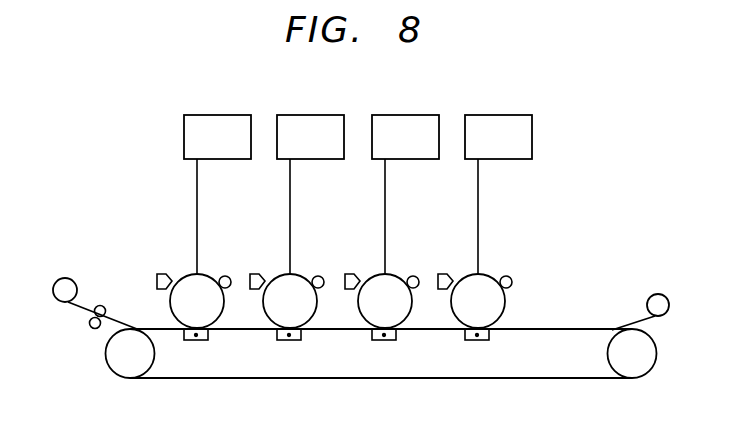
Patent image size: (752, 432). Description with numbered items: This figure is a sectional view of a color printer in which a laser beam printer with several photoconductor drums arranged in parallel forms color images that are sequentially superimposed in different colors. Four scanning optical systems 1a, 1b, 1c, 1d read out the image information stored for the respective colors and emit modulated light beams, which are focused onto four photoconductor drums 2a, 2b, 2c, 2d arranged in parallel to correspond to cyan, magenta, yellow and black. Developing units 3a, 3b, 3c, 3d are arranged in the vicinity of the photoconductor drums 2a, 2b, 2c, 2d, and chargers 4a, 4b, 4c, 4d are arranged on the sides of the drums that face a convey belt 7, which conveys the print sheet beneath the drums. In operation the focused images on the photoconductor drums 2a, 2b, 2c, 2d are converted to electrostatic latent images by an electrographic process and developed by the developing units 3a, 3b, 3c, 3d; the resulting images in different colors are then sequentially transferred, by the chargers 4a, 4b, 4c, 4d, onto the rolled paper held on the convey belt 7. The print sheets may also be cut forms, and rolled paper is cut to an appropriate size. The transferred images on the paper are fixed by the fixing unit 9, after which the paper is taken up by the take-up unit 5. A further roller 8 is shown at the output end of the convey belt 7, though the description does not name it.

The scanning optical system 1a is at (518, 114).
The scanning optical system 1b is at (425, 114).
The scanning optical system 1c is at (330, 114).
The scanning optical system 1d is at (237, 114).
The photoconductor drum 2a is at (465, 272).
The photoconductor drum 2b is at (372, 272).
The photoconductor drum 2c is at (277, 272).
The photoconductor drum 2d is at (184, 272).
The developing unit 3a is at (508, 275).
The developing unit 3b is at (415, 275).
The developing unit 3c is at (320, 275).
The developing unit 3d is at (227, 275).
The charger 4a is at (477, 341).
The charger 4b is at (384, 341).
The charger 4c is at (289, 341).
The charger 4d is at (196, 341).
The take-up unit 5 is at (70, 278).
The convey belt 7 is at (565, 328).
The discharge roller 8 is at (655, 294).
The fixing unit 9 is at (107, 307).